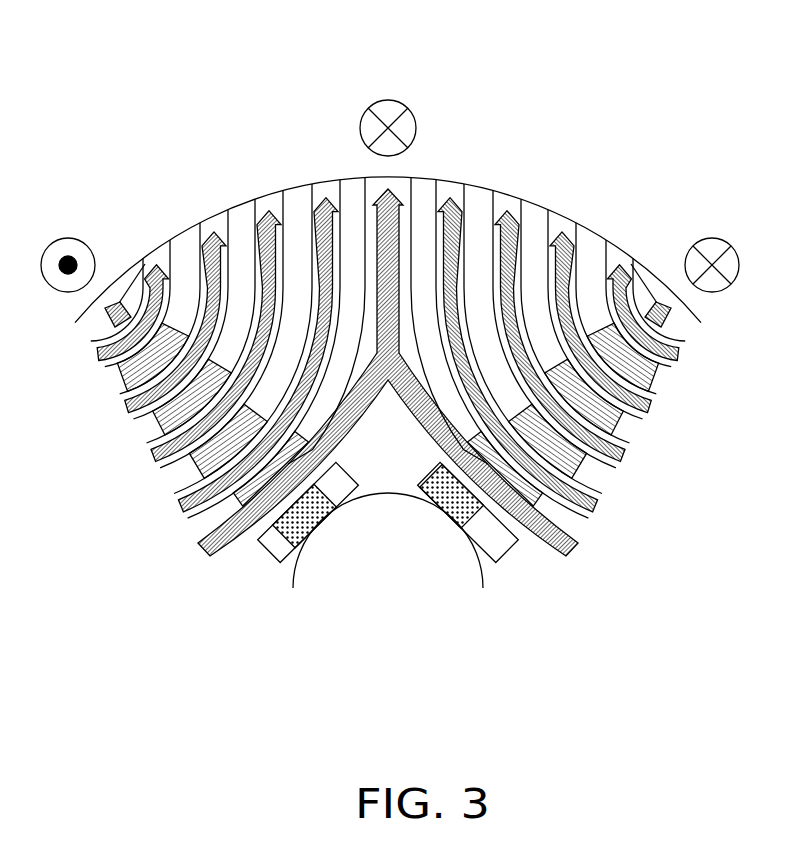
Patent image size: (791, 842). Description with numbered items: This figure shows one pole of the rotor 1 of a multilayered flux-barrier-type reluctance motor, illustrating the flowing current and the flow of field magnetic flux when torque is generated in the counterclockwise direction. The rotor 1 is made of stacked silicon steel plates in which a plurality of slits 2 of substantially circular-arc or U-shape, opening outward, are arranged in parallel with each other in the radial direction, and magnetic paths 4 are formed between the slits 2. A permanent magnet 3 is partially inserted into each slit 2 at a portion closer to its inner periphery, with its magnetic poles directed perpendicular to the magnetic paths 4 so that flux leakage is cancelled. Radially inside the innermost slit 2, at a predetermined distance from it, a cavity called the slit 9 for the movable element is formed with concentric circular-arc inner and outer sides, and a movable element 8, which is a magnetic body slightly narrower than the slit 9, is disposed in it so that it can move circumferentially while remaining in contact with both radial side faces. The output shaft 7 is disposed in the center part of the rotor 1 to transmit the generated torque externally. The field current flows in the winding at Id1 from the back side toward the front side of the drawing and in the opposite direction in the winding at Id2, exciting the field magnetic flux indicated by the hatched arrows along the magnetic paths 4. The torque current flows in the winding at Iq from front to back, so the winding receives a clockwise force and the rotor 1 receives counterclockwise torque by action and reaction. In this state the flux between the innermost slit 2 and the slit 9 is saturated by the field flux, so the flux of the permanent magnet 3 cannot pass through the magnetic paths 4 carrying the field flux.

The rotor 1 is at (388, 376).
The slit 2 is at (238, 262).
The permanent magnet 3 is at (172, 313).
The magnetic path 4 is at (322, 200).
The output shaft 7 is at (437, 567).
The movable element 8 is at (273, 526).
The slit for a movable element 9 is at (514, 542).
The winding at Id1 is at (55, 247).
The winding at Iq is at (388, 100).
The winding at Id2 is at (705, 238).